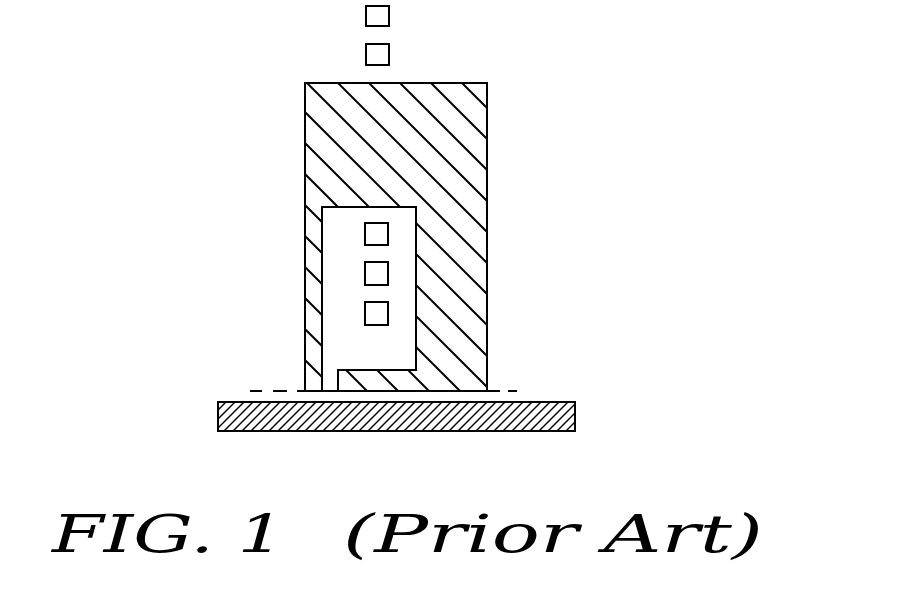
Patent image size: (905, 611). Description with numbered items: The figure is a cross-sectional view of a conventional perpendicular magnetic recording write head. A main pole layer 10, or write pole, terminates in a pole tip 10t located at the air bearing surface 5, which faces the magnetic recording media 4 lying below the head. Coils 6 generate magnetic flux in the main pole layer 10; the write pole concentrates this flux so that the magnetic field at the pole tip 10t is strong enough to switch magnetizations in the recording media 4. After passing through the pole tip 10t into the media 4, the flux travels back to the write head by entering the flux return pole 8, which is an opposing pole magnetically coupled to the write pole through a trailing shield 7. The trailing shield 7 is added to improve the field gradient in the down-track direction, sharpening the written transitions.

The magnetic recording media 4 is at (218, 405).
The air bearing surface 5 is at (387, 390).
The coils 6 is at (377, 235).
The trailing shield 7 is at (477, 273).
The flux return pole 8 is at (400, 380).
The main pole layer 10 is at (312, 360).
The pole tip 10t is at (312, 391).